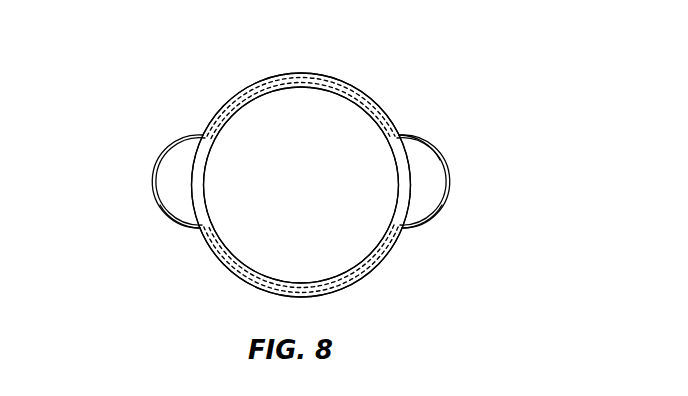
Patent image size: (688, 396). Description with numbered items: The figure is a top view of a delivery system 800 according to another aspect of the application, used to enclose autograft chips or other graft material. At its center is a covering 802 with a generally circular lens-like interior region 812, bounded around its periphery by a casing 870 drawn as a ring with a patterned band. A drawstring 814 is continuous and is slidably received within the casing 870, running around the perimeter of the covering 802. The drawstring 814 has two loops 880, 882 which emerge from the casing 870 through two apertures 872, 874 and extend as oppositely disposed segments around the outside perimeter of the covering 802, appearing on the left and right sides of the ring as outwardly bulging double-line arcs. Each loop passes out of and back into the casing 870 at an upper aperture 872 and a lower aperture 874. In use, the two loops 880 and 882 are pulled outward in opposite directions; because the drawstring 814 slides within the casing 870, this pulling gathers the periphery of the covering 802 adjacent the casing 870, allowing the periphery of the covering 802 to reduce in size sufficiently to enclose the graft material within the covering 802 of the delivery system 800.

The eye shield assembly 800 is at (123, 52).
The covering 802 is at (333, 73).
The lens 812 is at (337, 152).
The drawstring 814 is at (438, 208).
The casing 870 is at (368, 270).
The aperture 872 is at (416, 148).
The aperture 874 is at (203, 216).
The loop 880 is at (142, 171).
The loop 882 is at (469, 166).